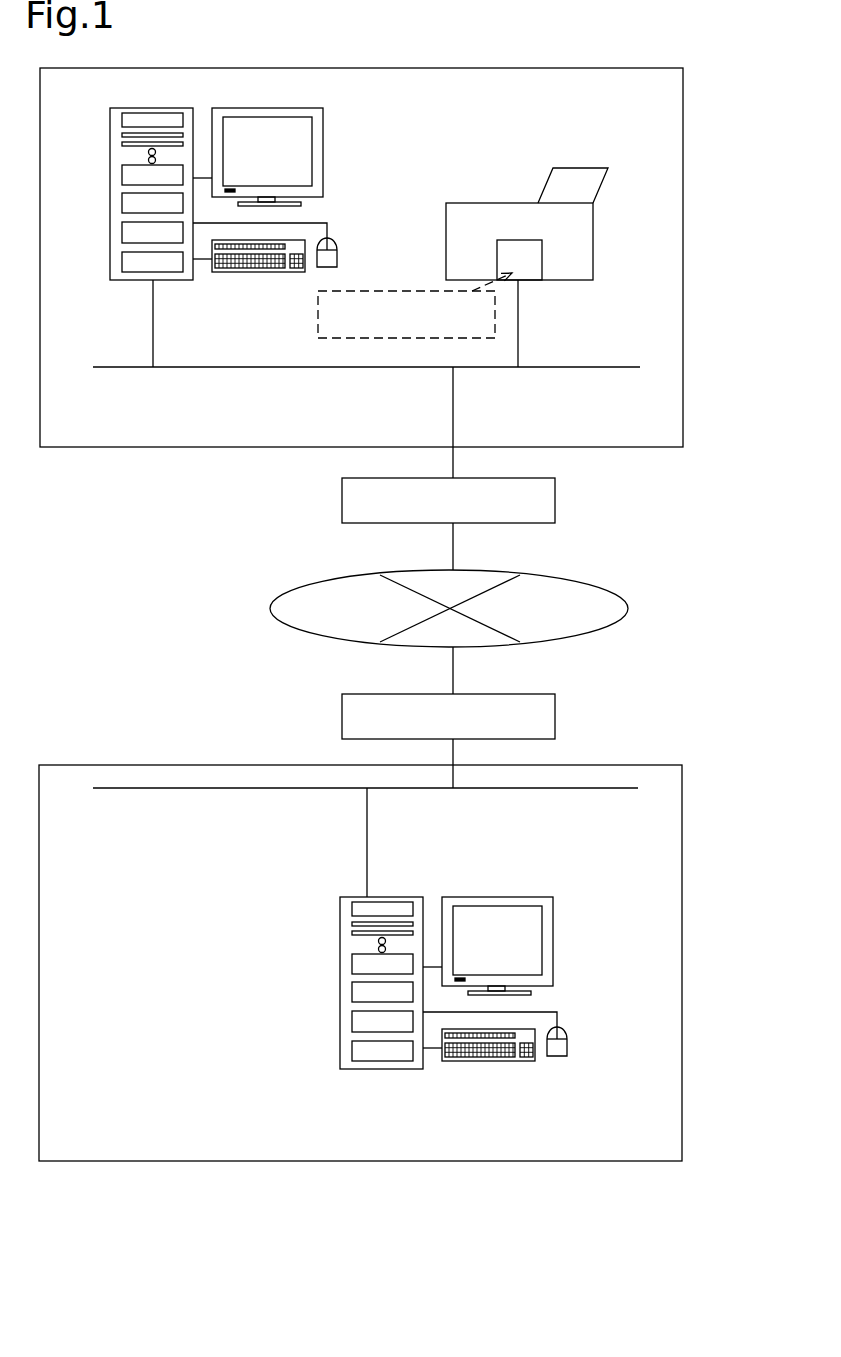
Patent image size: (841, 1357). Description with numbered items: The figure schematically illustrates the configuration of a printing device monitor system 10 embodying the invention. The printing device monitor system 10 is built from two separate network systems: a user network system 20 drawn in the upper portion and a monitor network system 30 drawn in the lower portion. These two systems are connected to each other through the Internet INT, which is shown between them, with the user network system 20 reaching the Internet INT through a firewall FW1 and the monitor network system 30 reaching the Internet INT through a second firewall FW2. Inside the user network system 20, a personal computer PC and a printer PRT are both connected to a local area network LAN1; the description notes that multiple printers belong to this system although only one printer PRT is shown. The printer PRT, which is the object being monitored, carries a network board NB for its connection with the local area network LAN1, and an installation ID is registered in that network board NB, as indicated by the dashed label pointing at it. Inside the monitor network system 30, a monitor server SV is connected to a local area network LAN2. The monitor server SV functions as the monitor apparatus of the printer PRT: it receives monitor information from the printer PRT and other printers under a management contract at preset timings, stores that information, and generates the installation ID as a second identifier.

The printing device monitor system 10 is at (328, 1216).
The user network system 20 is at (683, 125).
The monitor network system 30 is at (681, 828).
The personal computer PC is at (340, 130).
The printer PRT is at (470, 182).
The network board NB is at (543, 270).
The local area network LAN1 is at (580, 368).
The local area network LAN2 is at (193, 789).
The firewall FW1 is at (342, 503).
The firewall FW2 is at (342, 720).
The Internet INT is at (270, 608).
The monitor server SV is at (300, 1032).